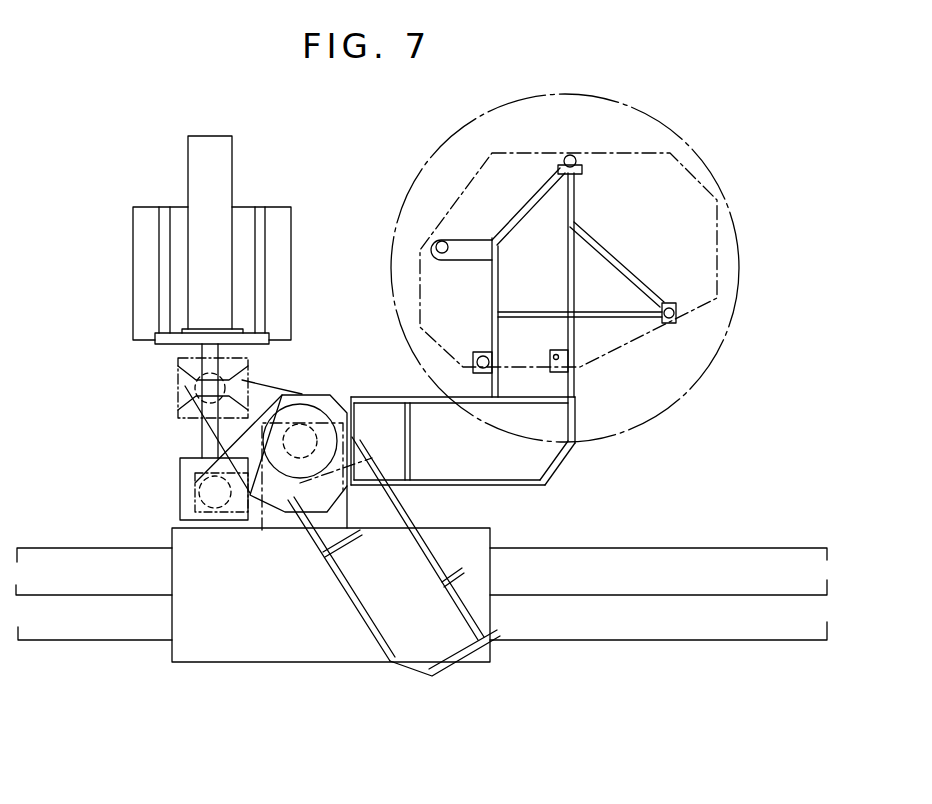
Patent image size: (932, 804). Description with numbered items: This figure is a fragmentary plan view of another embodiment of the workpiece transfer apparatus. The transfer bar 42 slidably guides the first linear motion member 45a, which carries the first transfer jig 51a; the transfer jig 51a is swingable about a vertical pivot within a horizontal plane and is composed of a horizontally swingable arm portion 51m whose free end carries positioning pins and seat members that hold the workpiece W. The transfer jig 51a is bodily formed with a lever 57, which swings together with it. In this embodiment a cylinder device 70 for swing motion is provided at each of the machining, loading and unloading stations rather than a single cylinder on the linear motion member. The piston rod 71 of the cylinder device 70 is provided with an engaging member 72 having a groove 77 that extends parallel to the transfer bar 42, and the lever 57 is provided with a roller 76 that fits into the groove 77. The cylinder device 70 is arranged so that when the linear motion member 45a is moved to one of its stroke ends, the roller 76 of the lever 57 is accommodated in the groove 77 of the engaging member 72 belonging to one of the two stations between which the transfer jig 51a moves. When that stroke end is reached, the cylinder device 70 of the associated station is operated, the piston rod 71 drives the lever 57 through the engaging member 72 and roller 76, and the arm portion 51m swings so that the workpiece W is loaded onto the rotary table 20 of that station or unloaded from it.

The cylinder device 70 is at (238, 164).
The piston rod 71 is at (200, 440).
The groove 77 is at (187, 480).
The engaging member 72 is at (190, 510).
The roller 76 is at (215, 505).
The lever 57 is at (276, 514).
The arm portion 51m is at (497, 483).
The first transfer jig 51a is at (592, 375).
The workpiece W is at (707, 222).
The rotary table 20 is at (740, 290).
The transfer bar 42 is at (637, 641).
The first linear motion member 45a is at (262, 652).